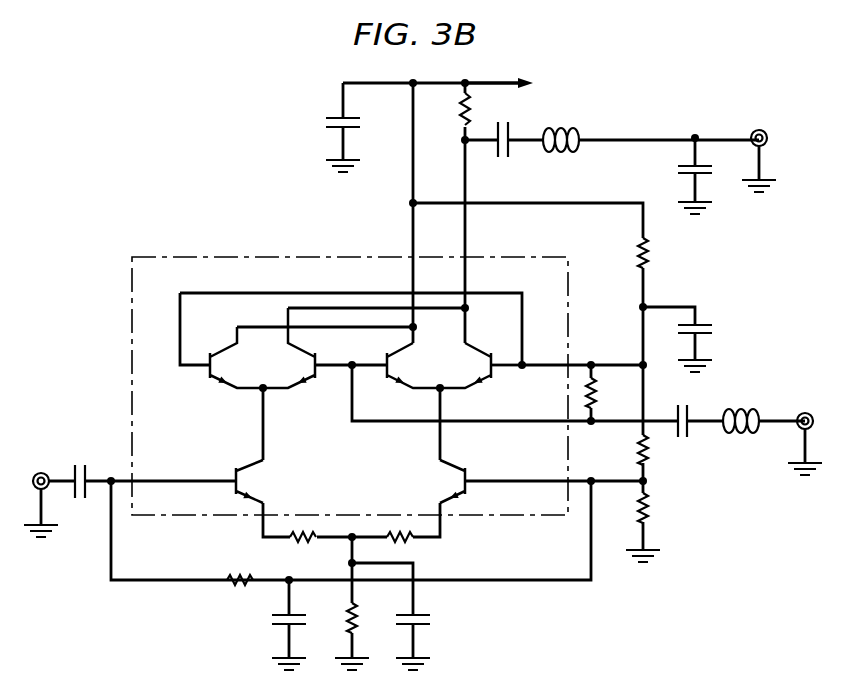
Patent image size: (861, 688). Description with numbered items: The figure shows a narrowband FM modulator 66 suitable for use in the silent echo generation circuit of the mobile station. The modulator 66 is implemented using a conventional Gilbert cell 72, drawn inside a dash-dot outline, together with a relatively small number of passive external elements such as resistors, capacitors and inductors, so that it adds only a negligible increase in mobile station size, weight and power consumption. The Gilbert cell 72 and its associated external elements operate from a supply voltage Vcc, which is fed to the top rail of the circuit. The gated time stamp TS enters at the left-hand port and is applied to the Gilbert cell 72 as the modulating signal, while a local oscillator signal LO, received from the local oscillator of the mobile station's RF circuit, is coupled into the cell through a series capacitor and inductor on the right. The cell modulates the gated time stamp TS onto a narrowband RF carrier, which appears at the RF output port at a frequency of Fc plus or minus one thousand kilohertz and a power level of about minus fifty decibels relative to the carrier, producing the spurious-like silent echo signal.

The narrowband FM modulator 66 is at (86, 132).
The Gilbert cell 72 is at (228, 258).
The supply voltage Vcc is at (517, 84).
The RF carrier output RF is at (759, 147).
The local oscillator signal LO is at (805, 431).
The gated time stamp TS is at (67, 492).